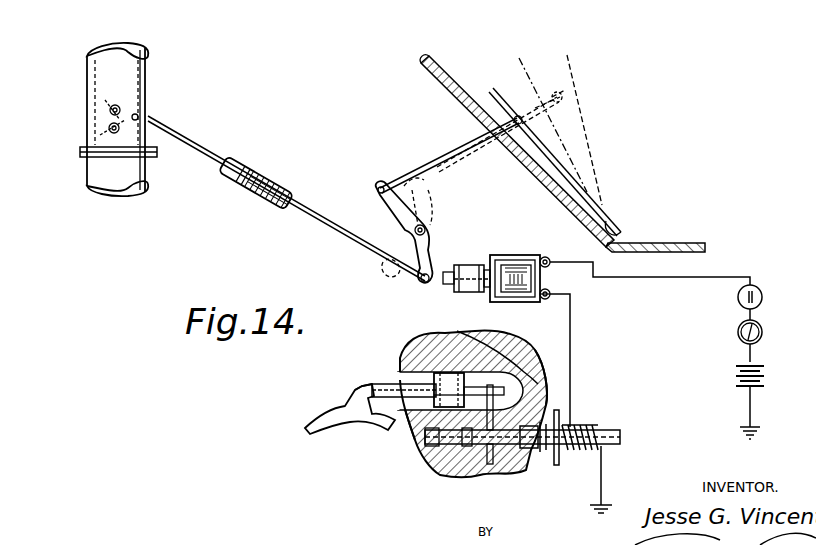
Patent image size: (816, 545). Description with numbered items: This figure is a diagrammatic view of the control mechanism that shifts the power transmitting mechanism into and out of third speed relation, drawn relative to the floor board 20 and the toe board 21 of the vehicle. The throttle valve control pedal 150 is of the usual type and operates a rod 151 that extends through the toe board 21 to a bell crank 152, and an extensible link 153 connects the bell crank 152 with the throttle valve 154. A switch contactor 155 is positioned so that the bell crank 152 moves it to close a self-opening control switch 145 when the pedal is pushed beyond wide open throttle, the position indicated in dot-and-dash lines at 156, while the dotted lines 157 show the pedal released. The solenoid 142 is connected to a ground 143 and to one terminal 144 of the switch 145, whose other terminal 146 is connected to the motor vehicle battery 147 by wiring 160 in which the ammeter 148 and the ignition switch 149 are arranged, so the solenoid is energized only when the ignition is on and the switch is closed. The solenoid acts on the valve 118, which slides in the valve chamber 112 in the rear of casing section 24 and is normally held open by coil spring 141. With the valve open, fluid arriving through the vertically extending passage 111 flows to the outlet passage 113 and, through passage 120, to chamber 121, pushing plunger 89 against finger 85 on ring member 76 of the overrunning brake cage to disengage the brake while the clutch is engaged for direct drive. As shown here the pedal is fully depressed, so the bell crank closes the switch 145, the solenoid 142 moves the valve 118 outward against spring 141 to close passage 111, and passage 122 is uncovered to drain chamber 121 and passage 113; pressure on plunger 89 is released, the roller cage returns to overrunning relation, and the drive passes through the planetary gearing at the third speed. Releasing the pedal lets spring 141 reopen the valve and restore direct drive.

The floor board 20 is at (658, 244).
The toe board 21 is at (448, 86).
The casing section 24 is at (462, 484).
The ring member 76 is at (336, 412).
The finger 85 is at (355, 388).
The plunger 89 is at (381, 384).
The vertically extending passage 111 is at (446, 346).
The valve chamber 112 is at (462, 460).
The outlet passage 113 is at (492, 462).
The valve 118 is at (433, 472).
The passage 120 is at (542, 392).
The chamber 121 is at (494, 373).
The passage 122 is at (527, 462).
The coil spring 141 is at (556, 418).
The solenoid 142 is at (586, 430).
The ground 143 is at (598, 504).
The terminal 144 is at (547, 300).
The self-opening control switch 145 is at (510, 301).
The terminal 146 is at (547, 257).
The motor vehicle battery 147 is at (762, 374).
The ammeter 148 is at (762, 330).
The ignition switch 149 is at (762, 294).
The throttle valve control pedal 150 is at (555, 156).
The rod 151 is at (445, 160).
The bell crank 152 is at (432, 250).
The extensible link 153 is at (197, 148).
The throttle valve 154 is at (85, 100).
The switch contactor 155 is at (454, 264).
The dot-and-dash lines 156 is at (521, 60).
The dotted lines 157 is at (552, 80).
The wiring 160 is at (670, 281).